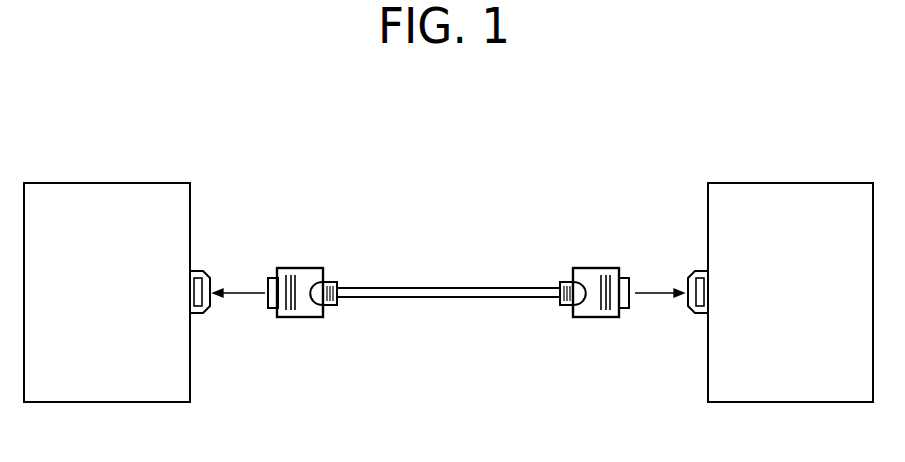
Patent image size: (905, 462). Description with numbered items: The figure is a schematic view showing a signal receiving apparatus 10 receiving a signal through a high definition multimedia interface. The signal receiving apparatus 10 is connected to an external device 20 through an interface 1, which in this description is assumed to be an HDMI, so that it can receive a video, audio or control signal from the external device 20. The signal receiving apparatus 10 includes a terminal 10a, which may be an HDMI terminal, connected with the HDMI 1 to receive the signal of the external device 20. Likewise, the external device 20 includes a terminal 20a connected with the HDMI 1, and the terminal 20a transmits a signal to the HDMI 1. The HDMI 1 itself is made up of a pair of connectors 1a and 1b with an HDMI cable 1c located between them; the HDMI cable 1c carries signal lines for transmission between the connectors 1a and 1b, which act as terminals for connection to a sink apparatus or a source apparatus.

The interface 1 is at (414, 226).
The connector 1a is at (596, 267).
The connector 1b is at (300, 267).
The HDMI cable 1c is at (511, 287).
The signal receiving apparatus 10 is at (788, 183).
The terminal 10a is at (703, 269).
The external device 20 is at (106, 183).
The terminal 20a is at (194, 269).